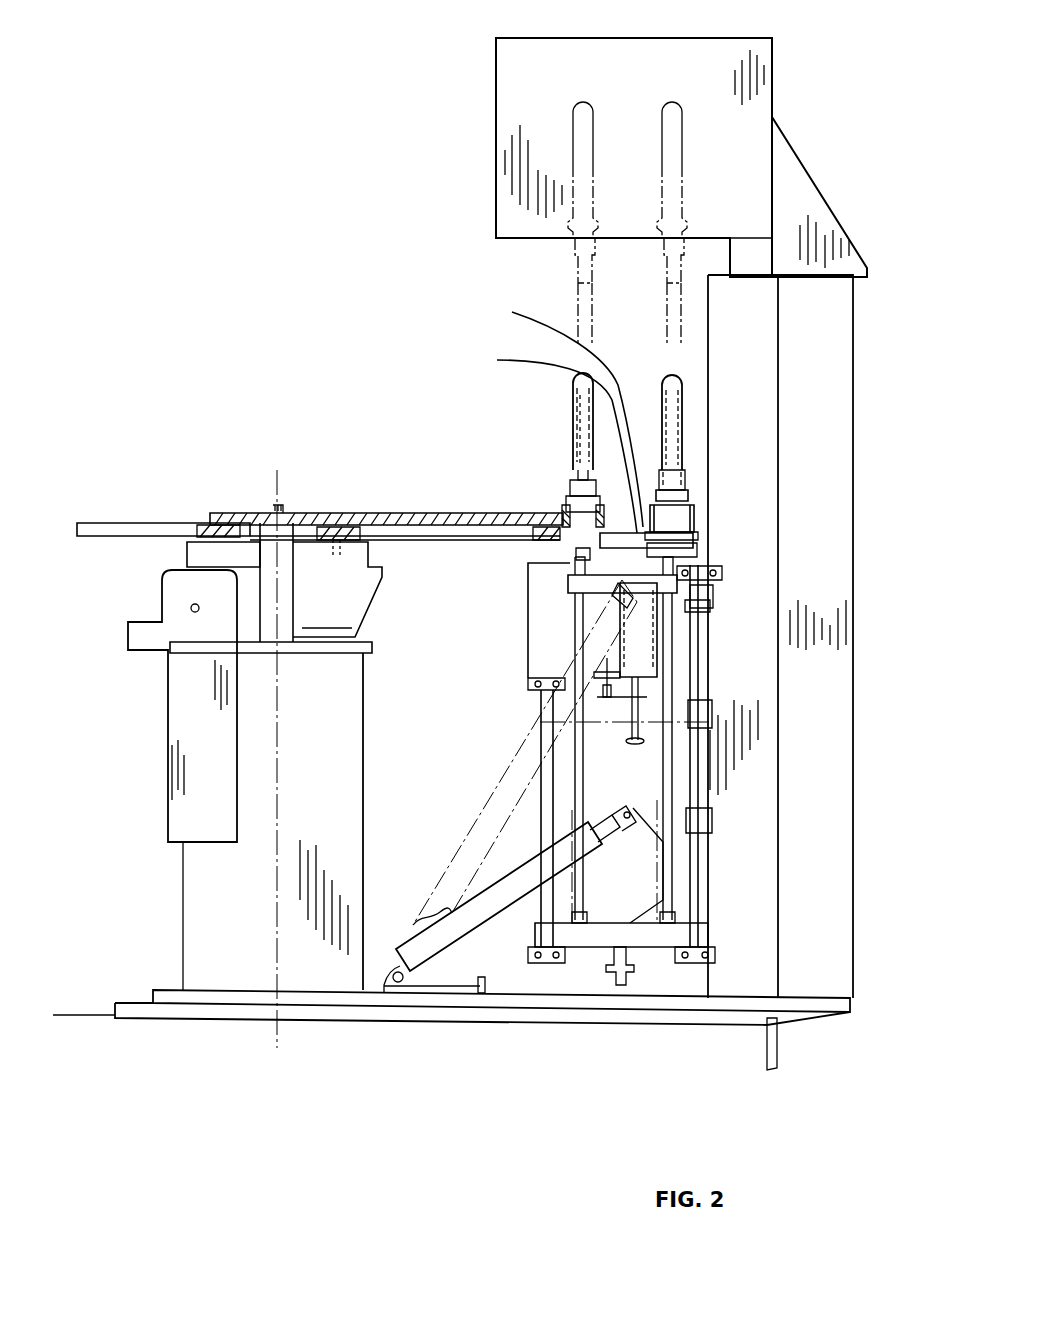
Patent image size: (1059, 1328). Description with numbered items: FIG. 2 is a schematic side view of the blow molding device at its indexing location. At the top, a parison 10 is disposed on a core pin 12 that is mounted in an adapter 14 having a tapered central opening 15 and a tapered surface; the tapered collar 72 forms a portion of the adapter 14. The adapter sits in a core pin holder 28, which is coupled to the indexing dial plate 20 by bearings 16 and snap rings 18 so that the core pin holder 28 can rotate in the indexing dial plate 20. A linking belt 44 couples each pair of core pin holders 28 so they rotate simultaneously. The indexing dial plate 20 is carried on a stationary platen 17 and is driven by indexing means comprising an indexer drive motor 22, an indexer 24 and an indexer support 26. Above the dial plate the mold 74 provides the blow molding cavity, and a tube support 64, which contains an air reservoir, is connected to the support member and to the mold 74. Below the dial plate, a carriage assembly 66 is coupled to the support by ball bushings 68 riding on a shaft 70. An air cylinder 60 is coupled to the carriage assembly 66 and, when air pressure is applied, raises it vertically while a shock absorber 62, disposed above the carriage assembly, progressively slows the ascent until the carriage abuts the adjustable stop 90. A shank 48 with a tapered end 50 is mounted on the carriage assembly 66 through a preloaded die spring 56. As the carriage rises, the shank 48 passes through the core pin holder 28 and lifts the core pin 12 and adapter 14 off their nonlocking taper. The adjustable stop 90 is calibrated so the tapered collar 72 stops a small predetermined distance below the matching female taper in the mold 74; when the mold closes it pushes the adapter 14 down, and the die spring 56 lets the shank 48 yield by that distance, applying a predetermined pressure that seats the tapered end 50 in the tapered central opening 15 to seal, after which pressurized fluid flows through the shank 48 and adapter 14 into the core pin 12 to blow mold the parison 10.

The mold 74 is at (492, 94).
The linking belt 44 is at (477, 415).
The parison 10 is at (580, 418).
The core pin 12 is at (479, 408).
The tapered central opening 15 is at (563, 518).
The stationary platen 17 is at (310, 507).
The indexing dial plate 20 is at (200, 493).
The snap rings 18 is at (564, 522).
The tapered collar 72 is at (594, 472).
The core pin holder 28 is at (600, 495).
The adapter 14 is at (690, 470).
The bearings 16 is at (560, 548).
The indexer 24 is at (371, 598).
The indexer drive motor 22 is at (167, 738).
The indexer support 26 is at (366, 780).
The tapered end 50 is at (664, 566).
The shank 48 is at (572, 626).
The shock absorber 62 is at (660, 663).
The adjustable stop 90 is at (598, 700).
The shaft 70 is at (556, 758).
The tube support 64 is at (810, 812).
The ball bushings 68 is at (714, 812).
The die spring 56 is at (588, 913).
The air cylinder 60 is at (497, 893).
The carriage assembly 66 is at (677, 885).